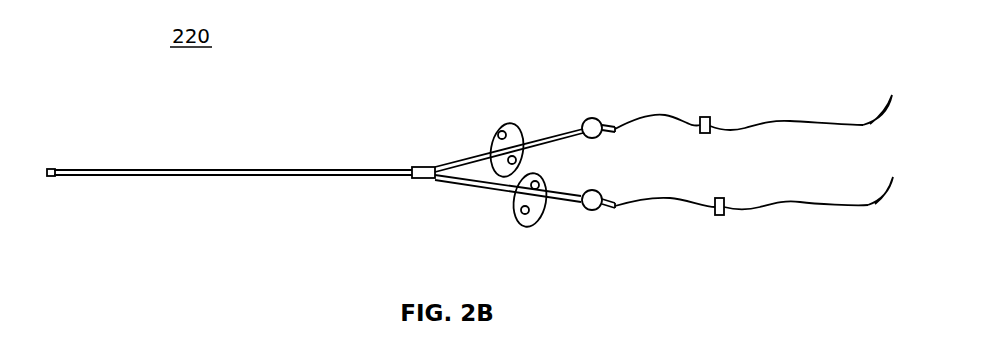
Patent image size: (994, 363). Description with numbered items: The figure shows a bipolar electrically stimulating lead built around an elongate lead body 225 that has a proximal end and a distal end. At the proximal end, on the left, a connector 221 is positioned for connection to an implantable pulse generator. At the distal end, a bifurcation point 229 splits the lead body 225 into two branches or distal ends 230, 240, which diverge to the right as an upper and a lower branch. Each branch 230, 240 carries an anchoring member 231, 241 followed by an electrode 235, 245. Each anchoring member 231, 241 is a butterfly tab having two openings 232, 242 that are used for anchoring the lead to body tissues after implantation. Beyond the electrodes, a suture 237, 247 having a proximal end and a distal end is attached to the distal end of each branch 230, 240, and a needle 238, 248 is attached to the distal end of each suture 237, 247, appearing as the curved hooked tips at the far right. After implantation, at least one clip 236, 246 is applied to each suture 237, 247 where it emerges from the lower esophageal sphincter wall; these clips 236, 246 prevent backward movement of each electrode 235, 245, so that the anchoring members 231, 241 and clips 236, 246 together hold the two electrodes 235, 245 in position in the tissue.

The connector 221 is at (52, 168).
The elongate lead body 225 is at (200, 171).
The bifurcation point 229 is at (421, 168).
The first branch 230 is at (454, 160).
The anchoring member 231 is at (545, 139).
The openings 232 is at (504, 132).
The electrode 235 is at (592, 119).
The clip 236 is at (707, 117).
The suture 237 is at (758, 123).
The needle 238 is at (882, 102).
The second branch 240 is at (472, 186).
The anchoring member 241 is at (545, 212).
The openings 242 is at (522, 218).
The electrode 245 is at (592, 210).
The clip 246 is at (718, 216).
The suture 247 is at (795, 204).
The needle 248 is at (887, 183).